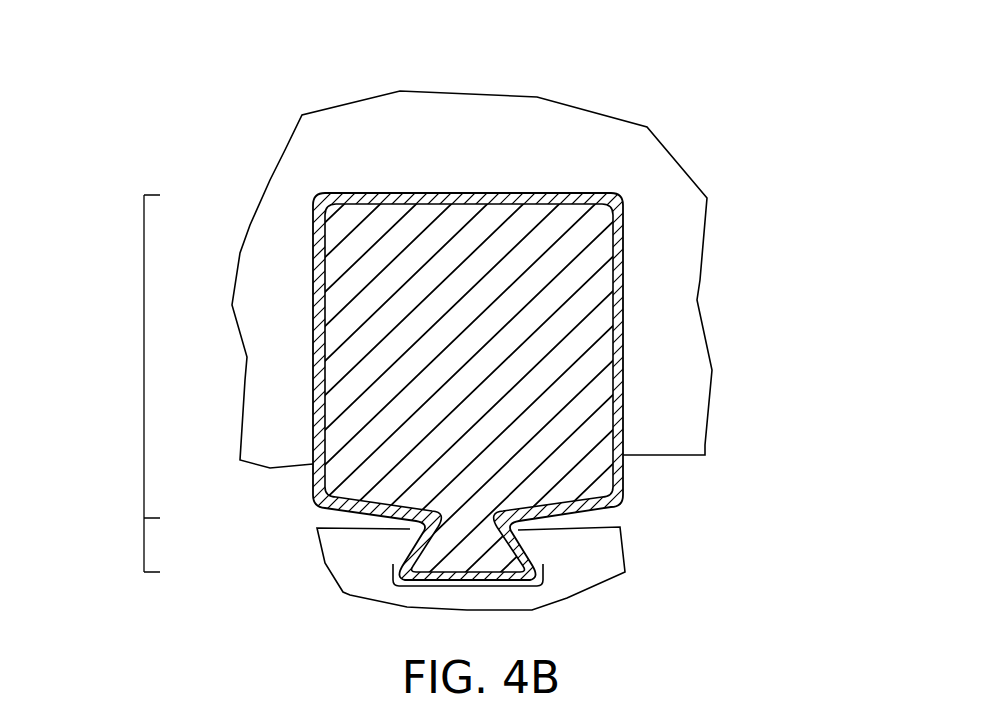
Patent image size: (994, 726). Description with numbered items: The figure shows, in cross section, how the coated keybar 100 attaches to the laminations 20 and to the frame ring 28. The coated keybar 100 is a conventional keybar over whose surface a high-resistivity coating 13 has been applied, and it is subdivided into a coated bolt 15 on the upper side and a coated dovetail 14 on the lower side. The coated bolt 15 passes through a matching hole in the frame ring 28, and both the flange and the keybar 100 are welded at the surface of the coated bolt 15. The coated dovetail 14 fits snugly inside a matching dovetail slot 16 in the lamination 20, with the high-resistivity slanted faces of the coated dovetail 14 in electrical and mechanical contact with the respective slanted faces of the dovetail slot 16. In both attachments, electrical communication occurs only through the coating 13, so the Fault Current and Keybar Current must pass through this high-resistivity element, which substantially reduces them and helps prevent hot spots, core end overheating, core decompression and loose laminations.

The coated keybar 100 is at (550, 178).
The frame ring 28 is at (448, 130).
The high-resistivity coating 13 is at (622, 413).
The coated bolt 15 is at (161, 356).
The coated dovetail 14 is at (162, 545).
The laminations 20 is at (318, 550).
The dovetail slot 16 is at (544, 571).